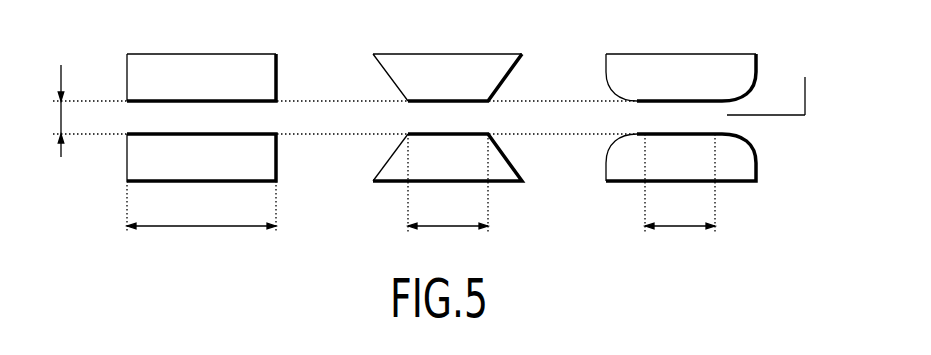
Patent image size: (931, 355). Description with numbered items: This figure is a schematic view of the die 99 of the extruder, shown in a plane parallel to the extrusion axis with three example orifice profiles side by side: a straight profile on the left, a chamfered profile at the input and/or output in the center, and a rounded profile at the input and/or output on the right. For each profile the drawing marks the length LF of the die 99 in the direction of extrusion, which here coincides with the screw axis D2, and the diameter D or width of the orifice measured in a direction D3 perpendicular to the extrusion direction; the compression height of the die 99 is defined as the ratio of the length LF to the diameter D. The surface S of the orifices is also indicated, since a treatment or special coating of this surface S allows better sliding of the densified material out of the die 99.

The die 99 is at (112, 187).
The diameter or width of the orifices D is at (339, 111).
The length of the die LF is at (421, 183).
The surface of the orifices S is at (405, 109).
The screw axis D2 is at (780, 116).
The direction perpendicular to the extrusion direction D3 is at (806, 90).